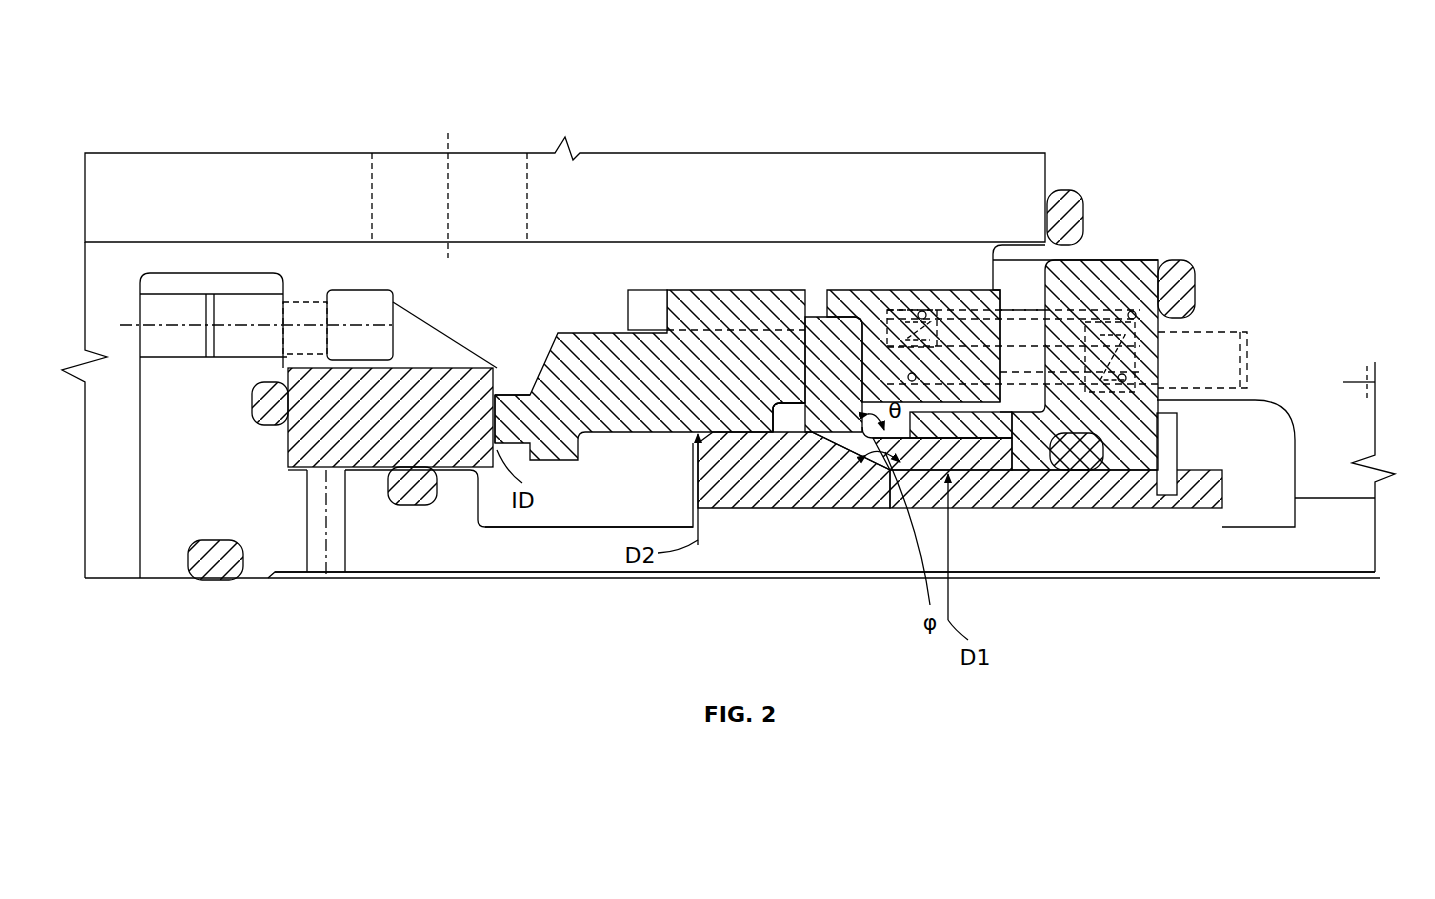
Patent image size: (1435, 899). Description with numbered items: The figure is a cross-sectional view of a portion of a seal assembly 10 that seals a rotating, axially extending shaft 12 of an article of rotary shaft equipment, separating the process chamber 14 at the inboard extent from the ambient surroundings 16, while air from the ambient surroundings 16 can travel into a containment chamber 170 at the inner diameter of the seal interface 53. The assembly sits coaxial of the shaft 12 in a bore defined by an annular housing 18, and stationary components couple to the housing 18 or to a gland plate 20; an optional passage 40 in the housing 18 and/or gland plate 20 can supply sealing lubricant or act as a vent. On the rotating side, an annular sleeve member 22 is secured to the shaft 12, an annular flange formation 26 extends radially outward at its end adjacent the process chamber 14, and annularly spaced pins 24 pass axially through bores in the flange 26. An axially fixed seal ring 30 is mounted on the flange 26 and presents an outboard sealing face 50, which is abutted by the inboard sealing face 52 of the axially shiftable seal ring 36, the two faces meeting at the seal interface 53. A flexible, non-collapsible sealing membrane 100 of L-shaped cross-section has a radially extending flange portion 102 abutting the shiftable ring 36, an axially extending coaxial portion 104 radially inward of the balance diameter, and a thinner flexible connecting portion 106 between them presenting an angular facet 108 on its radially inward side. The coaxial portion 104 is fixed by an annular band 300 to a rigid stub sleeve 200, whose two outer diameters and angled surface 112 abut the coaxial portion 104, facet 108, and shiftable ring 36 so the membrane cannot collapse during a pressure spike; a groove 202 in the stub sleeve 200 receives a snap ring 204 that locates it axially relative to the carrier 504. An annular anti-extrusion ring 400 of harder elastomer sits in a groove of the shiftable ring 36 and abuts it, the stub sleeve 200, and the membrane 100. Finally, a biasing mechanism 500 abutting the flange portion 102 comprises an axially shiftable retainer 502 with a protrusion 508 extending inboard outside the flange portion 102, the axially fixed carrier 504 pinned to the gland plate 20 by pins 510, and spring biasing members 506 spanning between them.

The seal assembly 10 is at (235, 205).
The shaft 12 is at (490, 603).
The process chamber 14 is at (98, 512).
The ambient surroundings 16 is at (1391, 422).
The annular housing 18 is at (603, 192).
The gland plate 20 is at (183, 70).
The annular sleeve member 22 is at (391, 557).
The pins 24 is at (233, 349).
The annular flange formation 26 is at (203, 474).
The axially fixed seal ring 30 is at (418, 382).
The axially shiftable seal ring 36 is at (632, 427).
The passage 40 is at (473, 209).
The outboard sealing face 50 is at (490, 437).
The inboard sealing face 52 is at (500, 420).
The seal interface 53 is at (497, 393).
The sealing membrane 100 is at (822, 332).
The flange portion 102 is at (812, 387).
The coaxial portion 104 is at (985, 430).
The flexible connecting portion 106 is at (848, 458).
The angular facet 108 is at (843, 432).
The angled surface 112 is at (789, 417).
The containment chamber 170 is at (548, 509).
The stub sleeve 200 is at (1090, 490).
The groove 202 is at (1168, 498).
The snap ring 204 is at (1180, 440).
The annular band 300 is at (1005, 468).
The annular anti-extrusion ring 400 is at (783, 422).
The biasing mechanism 500 is at (1085, 196).
The retainer 502 is at (870, 330).
The carrier 504 is at (1133, 268).
The biasing members 506 is at (1033, 330).
The protrusion 508 is at (832, 300).
The pins 510 is at (1225, 342).